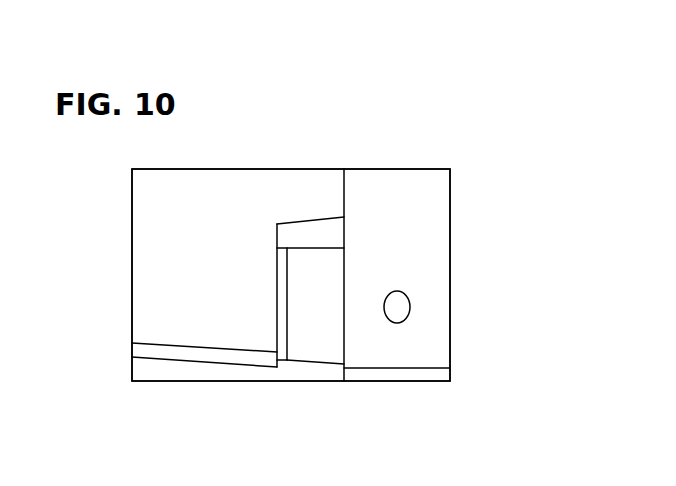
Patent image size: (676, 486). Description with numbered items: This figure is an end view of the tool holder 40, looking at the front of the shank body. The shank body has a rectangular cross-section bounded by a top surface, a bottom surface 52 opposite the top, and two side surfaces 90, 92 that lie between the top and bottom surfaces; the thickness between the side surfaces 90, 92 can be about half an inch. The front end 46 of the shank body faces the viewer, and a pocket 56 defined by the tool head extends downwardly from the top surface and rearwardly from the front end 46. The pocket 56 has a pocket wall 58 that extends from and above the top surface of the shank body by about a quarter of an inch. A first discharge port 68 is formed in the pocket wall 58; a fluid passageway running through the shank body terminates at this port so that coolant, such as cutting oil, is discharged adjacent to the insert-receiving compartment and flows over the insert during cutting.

The tool holder 40 is at (323, 111).
The side surface 90 is at (256, 168).
The bottom surface 52 is at (132, 253).
The front end 46 is at (228, 267).
The side surface 92 is at (170, 382).
The pocket 56 is at (298, 360).
The pocket wall 58 is at (377, 233).
The first discharge port 68 is at (407, 313).